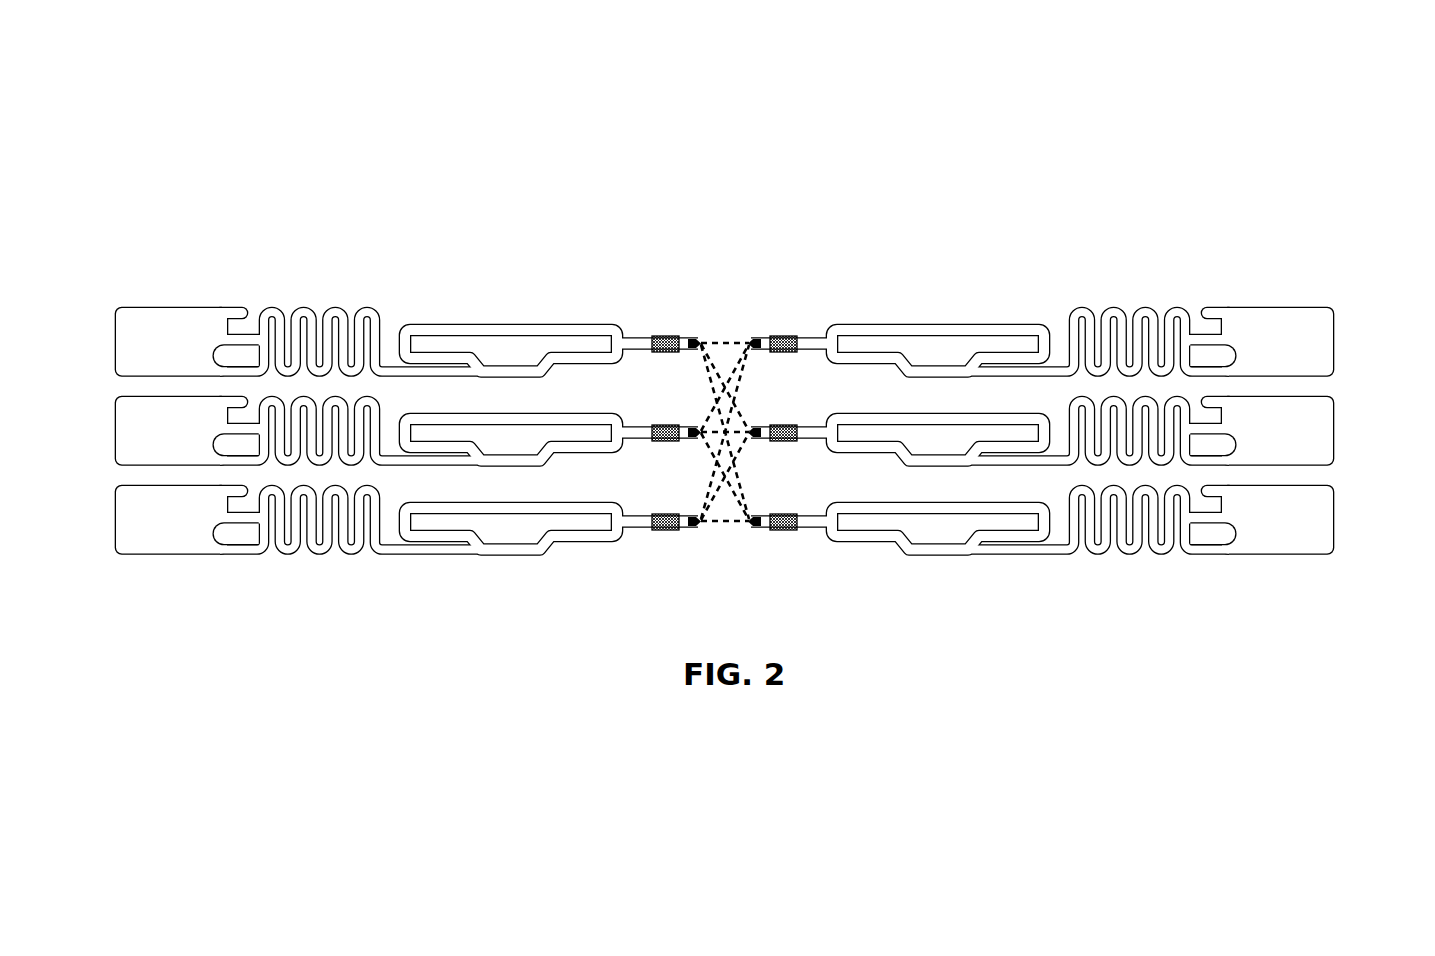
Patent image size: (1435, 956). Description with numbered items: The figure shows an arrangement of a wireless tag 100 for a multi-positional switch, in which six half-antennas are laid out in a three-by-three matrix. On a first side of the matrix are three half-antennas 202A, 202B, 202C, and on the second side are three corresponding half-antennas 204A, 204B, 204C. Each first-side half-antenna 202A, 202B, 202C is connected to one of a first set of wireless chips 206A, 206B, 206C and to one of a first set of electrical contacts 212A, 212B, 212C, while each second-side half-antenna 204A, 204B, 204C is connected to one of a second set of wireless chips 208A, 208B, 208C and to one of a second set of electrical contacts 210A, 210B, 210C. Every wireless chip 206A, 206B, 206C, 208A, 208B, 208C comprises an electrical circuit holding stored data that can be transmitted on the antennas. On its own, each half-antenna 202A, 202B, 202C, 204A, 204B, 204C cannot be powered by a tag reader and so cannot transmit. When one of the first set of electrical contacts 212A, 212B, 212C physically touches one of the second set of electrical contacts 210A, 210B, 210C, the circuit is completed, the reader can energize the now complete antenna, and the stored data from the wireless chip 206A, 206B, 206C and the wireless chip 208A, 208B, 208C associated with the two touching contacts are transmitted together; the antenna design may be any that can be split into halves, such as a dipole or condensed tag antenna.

The wireless tag 100 is at (376, 81).
The half-antenna 202A is at (1337, 529).
The half-antenna 202B is at (1337, 437).
The half-antenna 202C is at (1337, 331).
The half-antenna 204A is at (113, 529).
The half-antenna 204B is at (113, 435).
The half-antenna 204C is at (113, 330).
The wireless chip 206A is at (790, 530).
The wireless chip 206B is at (789, 441).
The wireless chip 206C is at (783, 336).
The wireless chip 208A is at (665, 530).
The wireless chip 208B is at (667, 441).
The wireless chip 208C is at (662, 336).
The electrical contact 210A is at (689, 527).
The electrical contact 210B is at (691, 427).
The electrical contact 210C is at (690, 338).
The electrical contact 212A is at (762, 527).
The electrical contact 212B is at (761, 427).
The electrical contact 212C is at (755, 341).